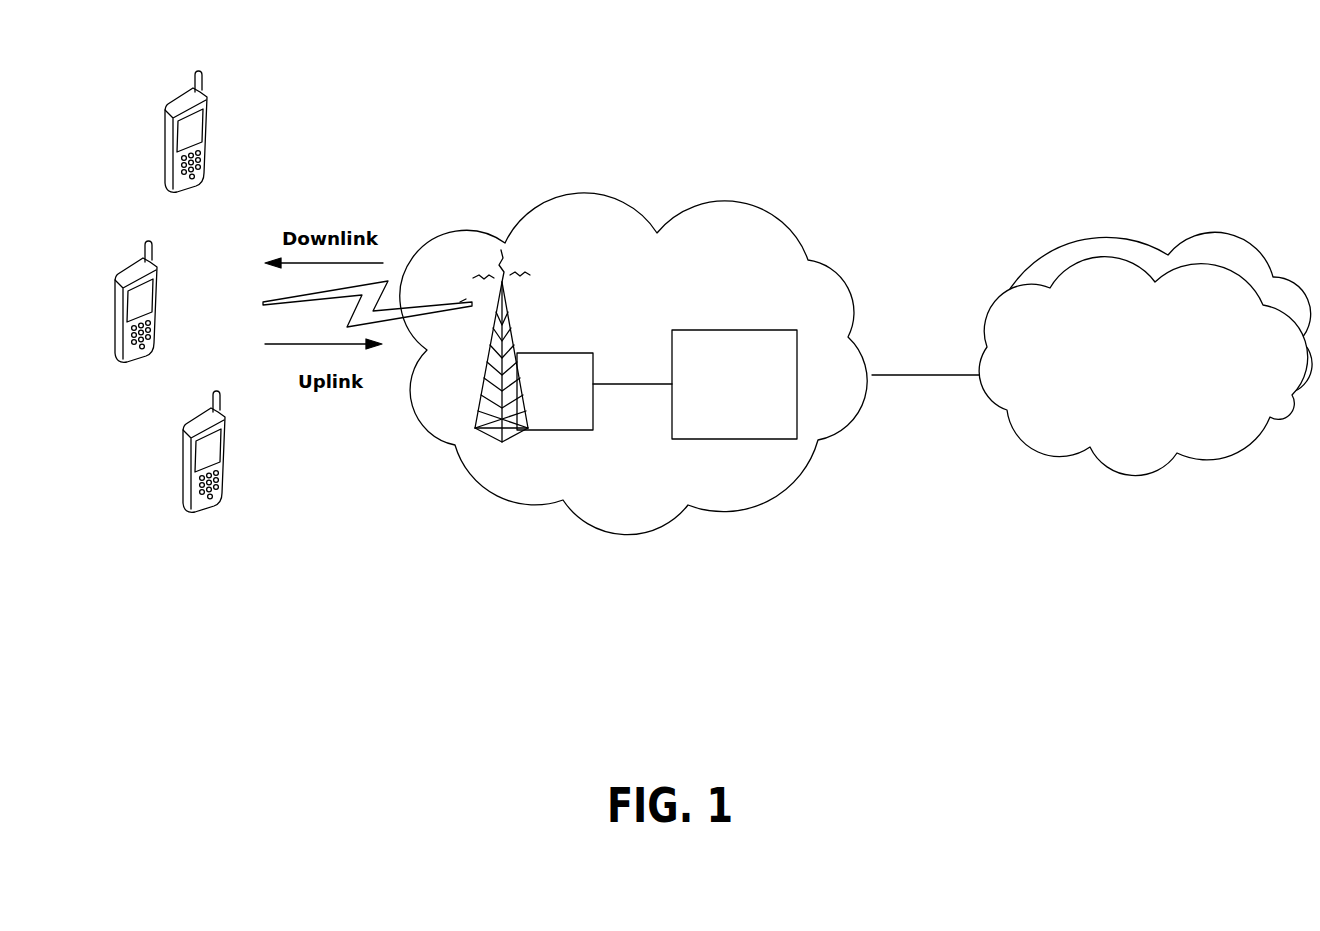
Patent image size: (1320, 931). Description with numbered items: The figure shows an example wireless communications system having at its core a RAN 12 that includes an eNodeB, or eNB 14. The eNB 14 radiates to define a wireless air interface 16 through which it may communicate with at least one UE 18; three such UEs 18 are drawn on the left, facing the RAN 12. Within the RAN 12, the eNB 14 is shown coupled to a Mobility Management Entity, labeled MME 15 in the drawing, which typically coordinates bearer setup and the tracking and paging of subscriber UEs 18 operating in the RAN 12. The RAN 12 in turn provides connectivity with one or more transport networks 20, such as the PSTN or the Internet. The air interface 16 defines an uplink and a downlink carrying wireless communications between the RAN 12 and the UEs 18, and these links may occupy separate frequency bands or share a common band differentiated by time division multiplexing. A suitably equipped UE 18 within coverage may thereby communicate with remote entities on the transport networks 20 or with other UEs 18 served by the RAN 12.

The RAN 12 is at (726, 203).
The eNodeB (eNB) 14 is at (545, 353).
The mobility management entity (MME) 15 is at (743, 330).
The wireless air interface 16 is at (397, 282).
The UE 18 is at (209, 108).
The transport networks 20 is at (1248, 247).